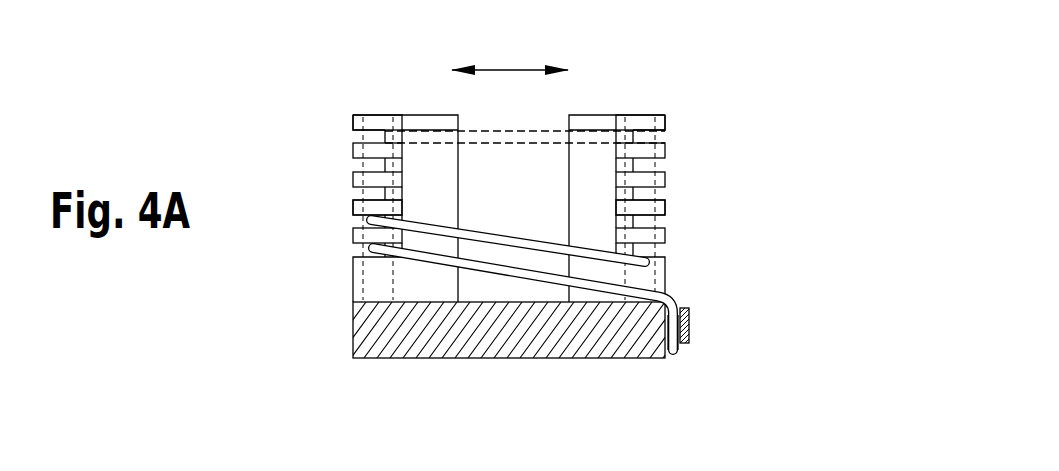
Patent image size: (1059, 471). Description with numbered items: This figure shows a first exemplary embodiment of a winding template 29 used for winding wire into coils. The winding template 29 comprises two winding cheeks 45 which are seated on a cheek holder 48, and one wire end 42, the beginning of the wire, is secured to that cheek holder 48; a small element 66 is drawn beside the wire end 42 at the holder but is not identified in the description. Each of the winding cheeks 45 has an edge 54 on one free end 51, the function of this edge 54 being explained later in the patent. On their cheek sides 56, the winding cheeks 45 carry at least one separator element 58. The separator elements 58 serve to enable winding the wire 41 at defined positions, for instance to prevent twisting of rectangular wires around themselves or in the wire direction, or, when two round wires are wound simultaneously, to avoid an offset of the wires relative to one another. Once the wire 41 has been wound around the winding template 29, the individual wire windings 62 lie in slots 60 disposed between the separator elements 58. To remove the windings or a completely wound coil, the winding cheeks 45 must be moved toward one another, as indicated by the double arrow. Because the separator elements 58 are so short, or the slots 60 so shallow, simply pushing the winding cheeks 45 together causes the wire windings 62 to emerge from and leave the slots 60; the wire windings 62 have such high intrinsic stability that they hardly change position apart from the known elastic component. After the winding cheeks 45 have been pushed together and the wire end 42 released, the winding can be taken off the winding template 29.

The winding template 29 is at (677, 97).
The wire 41 is at (508, 240).
The wire end 42 is at (672, 346).
The winding cheeks 45 is at (427, 102).
The cheek holder 48 is at (523, 330).
The free end 51 is at (382, 112).
The edge 54 is at (355, 122).
The cheek sides 56 is at (343, 207).
The separator element 58 is at (352, 202).
The slots 60 is at (362, 251).
The wire windings 62 is at (377, 252).
The contact pad 66 is at (690, 322).